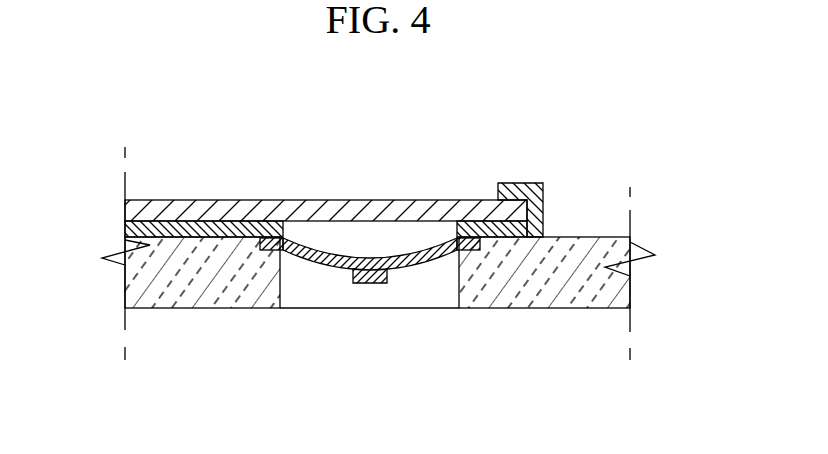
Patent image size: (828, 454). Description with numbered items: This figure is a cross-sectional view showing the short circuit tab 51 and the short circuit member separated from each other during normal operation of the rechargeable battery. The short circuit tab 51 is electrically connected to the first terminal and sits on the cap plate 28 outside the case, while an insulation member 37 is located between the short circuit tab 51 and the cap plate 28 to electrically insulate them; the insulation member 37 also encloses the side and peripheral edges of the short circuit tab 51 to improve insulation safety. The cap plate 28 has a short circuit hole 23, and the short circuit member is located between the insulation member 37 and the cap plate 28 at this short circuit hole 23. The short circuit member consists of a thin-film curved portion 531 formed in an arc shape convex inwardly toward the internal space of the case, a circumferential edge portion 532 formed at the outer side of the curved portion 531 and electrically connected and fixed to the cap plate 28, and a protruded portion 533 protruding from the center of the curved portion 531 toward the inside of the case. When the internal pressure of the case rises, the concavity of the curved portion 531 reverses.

The short circuit hole 23 is at (311, 292).
The cap plate 28 is at (563, 287).
The insulation member 37 is at (532, 192).
The short circuit tab 51 is at (307, 210).
The curved portion 531 is at (417, 259).
The circumferential edge portion 532 is at (470, 251).
The protruded portion 533 is at (370, 284).